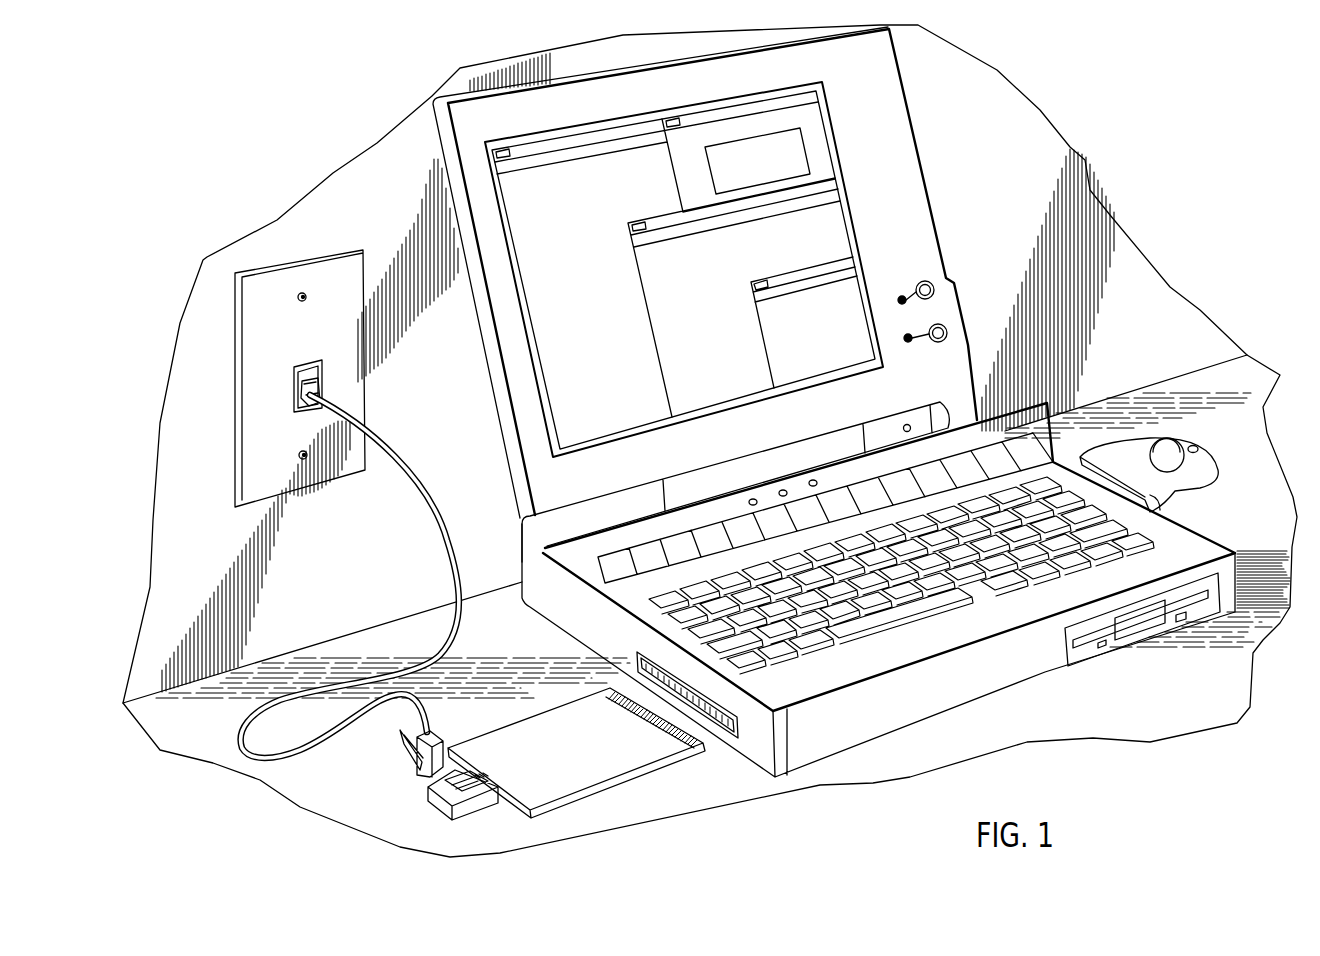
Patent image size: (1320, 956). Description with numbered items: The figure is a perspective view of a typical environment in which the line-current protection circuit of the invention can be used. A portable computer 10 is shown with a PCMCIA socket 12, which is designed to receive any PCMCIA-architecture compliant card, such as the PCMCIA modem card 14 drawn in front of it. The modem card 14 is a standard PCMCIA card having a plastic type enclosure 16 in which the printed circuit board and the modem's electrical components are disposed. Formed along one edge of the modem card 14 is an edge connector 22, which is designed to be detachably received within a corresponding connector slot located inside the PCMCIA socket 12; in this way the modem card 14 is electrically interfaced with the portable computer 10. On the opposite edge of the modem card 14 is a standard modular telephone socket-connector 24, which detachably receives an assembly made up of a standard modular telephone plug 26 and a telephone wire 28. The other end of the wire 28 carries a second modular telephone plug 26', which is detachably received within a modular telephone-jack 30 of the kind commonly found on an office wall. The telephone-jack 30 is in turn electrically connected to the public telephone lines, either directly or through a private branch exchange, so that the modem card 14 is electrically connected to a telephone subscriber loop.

The portable computer 10 is at (834, 434).
The PCMCIA socket 12 is at (878, 622).
The PCMCIA modem card 14 is at (576, 768).
The plastic type enclosure 16 is at (532, 813).
The edge connector 22 is at (703, 745).
The RJ-11 socket-connector 24 is at (427, 797).
The RJ-11 plug 26 is at (378, 760).
The RJ-11 plug 26' is at (208, 405).
The telephone wire 28 is at (242, 735).
The RJ-11 telephone-jack 30 is at (297, 378).